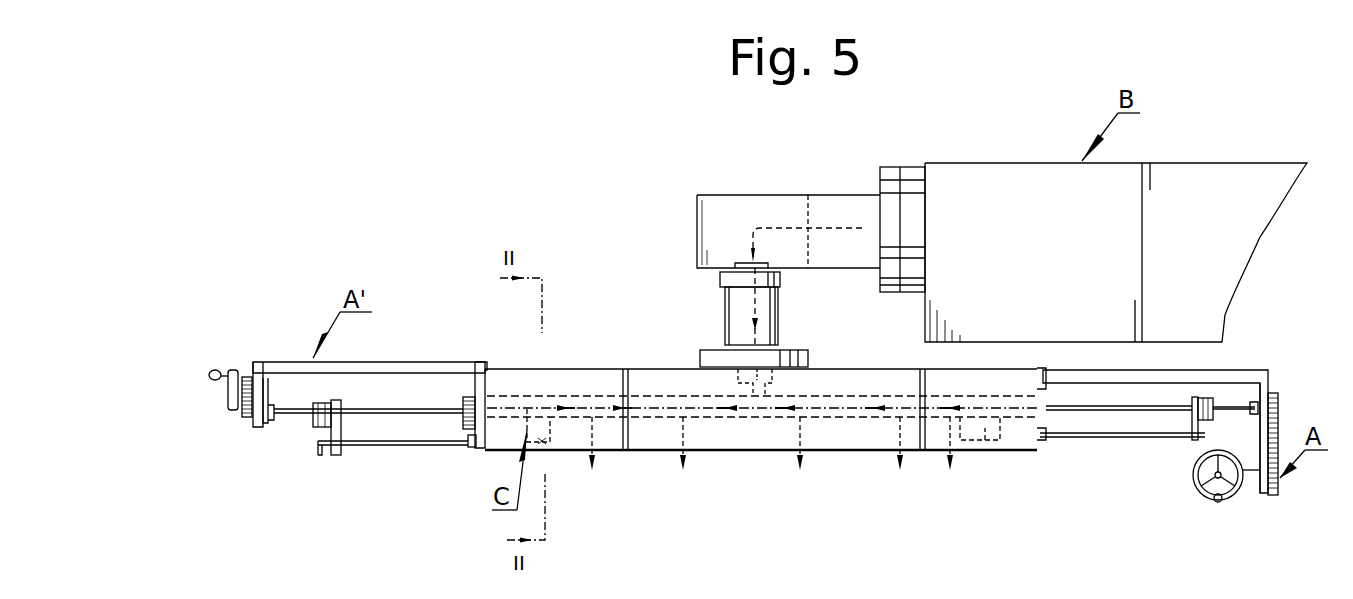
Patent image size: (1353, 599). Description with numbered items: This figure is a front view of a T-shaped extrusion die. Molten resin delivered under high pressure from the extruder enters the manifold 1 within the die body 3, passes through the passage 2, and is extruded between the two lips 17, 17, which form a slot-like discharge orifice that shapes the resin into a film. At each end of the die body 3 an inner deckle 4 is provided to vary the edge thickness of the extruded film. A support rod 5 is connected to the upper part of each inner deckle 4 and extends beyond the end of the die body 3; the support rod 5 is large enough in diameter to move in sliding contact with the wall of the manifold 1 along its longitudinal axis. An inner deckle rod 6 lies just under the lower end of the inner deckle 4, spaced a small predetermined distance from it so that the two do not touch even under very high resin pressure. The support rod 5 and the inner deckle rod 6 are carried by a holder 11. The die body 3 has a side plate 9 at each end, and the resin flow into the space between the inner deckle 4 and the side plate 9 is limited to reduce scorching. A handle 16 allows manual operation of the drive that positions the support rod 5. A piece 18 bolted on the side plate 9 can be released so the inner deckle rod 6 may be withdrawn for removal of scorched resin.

The manifold 1 is at (638, 412).
The passage 2 is at (757, 428).
The die body 3 is at (593, 367).
The inner deckle 4 is at (548, 442).
The support rod 5 is at (440, 415).
The inner deckle rod 6 is at (408, 445).
The side plate 9 is at (480, 365).
The holder 11 is at (337, 447).
The handle 16 is at (232, 385).
The lips 17 is at (717, 432).
The piece 18 is at (474, 452).